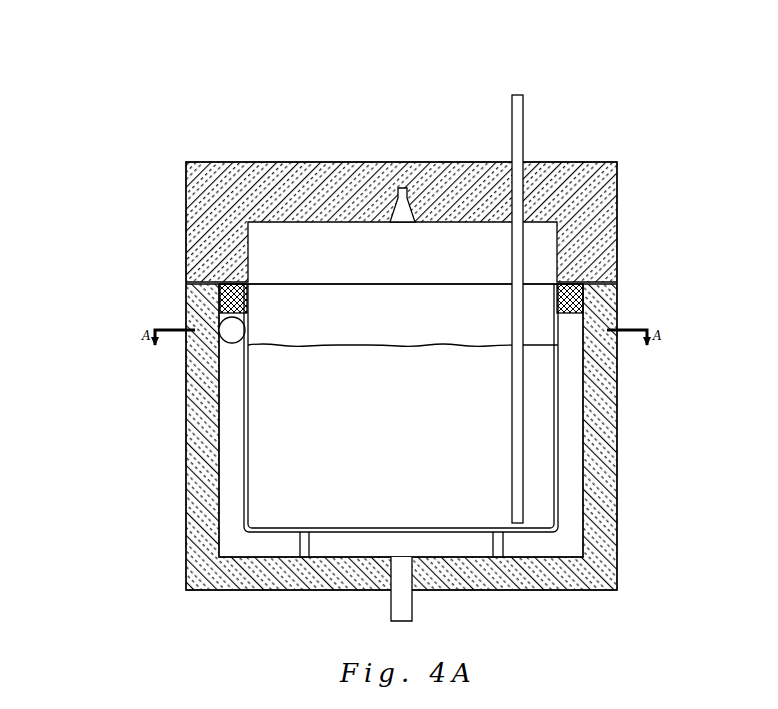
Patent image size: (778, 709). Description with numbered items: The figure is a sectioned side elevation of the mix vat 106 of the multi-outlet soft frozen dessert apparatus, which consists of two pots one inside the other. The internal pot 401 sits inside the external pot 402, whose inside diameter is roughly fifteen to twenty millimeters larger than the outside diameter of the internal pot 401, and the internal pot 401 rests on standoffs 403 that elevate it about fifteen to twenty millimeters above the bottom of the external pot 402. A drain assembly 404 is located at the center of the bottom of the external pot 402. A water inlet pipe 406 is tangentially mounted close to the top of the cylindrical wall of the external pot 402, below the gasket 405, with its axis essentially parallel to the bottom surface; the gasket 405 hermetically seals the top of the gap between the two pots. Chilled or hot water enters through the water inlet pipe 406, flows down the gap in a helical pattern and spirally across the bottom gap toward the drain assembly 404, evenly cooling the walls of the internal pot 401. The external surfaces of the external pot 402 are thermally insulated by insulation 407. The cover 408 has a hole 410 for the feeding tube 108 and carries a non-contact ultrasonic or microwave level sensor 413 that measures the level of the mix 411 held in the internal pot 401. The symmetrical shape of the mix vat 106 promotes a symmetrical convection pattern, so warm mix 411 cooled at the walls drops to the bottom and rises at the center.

The mix vat 106 is at (587, 68).
The feeding tube 108 is at (527, 128).
The internal pot 401 is at (560, 232).
The external pot 402 is at (585, 378).
The standoffs 403 is at (302, 551).
The drain assembly 404 is at (417, 610).
The gasket 405 is at (577, 302).
The water inlet pipe 406 is at (230, 328).
The insulation 407 is at (608, 458).
The cover 408 is at (584, 190).
The hole 410 is at (510, 168).
The mix 411 is at (308, 500).
The level sensor 413 is at (402, 190).